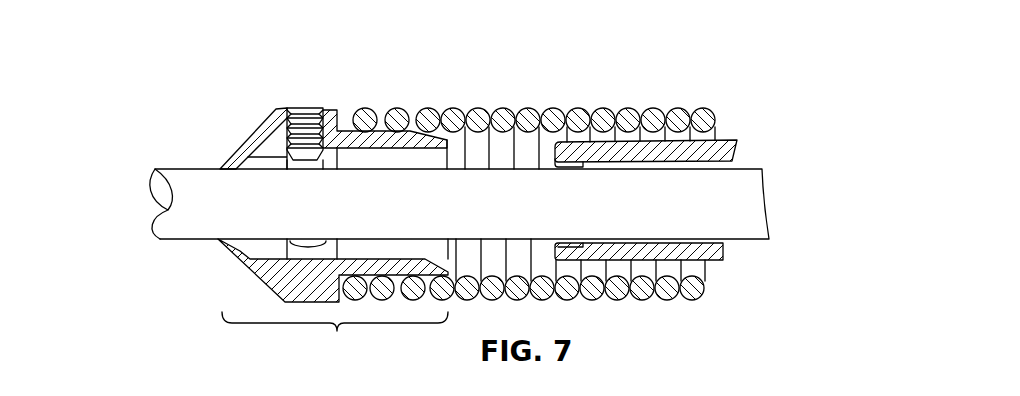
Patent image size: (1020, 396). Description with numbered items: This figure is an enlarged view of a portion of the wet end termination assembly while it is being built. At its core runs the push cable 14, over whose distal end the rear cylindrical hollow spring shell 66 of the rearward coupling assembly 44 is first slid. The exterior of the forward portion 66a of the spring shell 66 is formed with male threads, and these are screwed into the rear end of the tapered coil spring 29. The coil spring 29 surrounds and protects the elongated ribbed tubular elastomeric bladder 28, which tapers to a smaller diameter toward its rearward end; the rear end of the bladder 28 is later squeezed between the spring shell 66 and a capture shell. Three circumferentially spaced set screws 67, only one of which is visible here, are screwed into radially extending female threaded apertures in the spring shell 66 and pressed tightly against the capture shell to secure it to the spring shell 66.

The push cable 14 is at (152, 192).
The elastomeric bladder 28 is at (727, 250).
The coil spring 29 is at (630, 104).
The rearward coupling assembly 44 is at (335, 337).
The spring shell 66 is at (253, 135).
The forward portion of the spring shell 66a is at (402, 143).
The set screws 67 is at (303, 107).